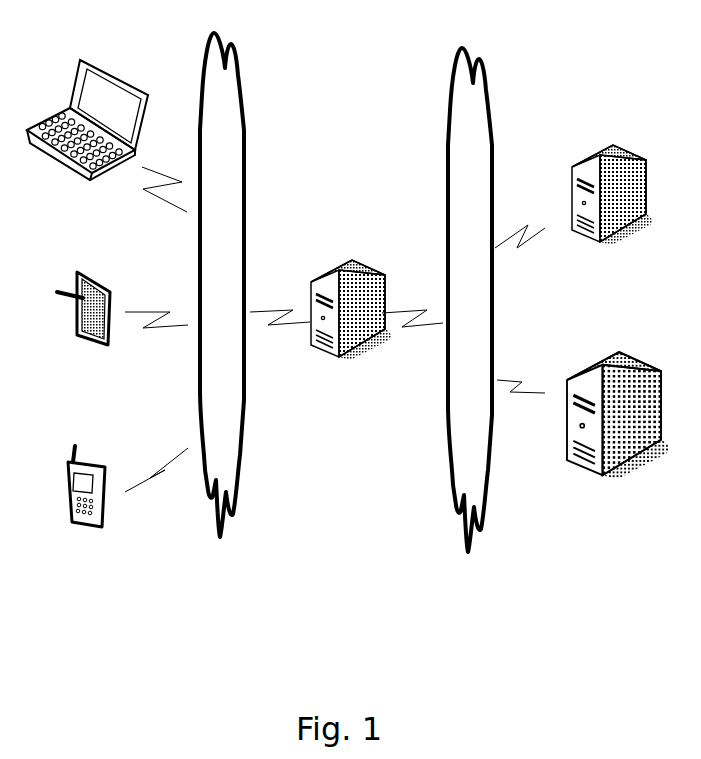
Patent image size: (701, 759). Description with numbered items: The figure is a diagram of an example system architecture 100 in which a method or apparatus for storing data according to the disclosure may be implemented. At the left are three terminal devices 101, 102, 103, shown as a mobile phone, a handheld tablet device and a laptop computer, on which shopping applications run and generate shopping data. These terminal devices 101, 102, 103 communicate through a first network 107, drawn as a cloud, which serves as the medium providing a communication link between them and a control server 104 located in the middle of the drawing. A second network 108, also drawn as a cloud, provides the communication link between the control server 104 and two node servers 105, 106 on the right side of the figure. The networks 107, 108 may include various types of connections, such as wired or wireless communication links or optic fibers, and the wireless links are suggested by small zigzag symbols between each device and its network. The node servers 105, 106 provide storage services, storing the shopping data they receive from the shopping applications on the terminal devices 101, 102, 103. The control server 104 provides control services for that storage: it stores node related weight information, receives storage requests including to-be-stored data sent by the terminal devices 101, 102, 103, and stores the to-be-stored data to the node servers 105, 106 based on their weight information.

The system architecture 100 is at (552, 49).
The terminal device 101 is at (87, 504).
The terminal device 102 is at (83, 328).
The terminal device 103 is at (87, 137).
The control server 104 is at (351, 327).
The node server 105 is at (612, 213).
The node server 106 is at (618, 434).
The network 107 is at (222, 285).
The network 108 is at (470, 300).